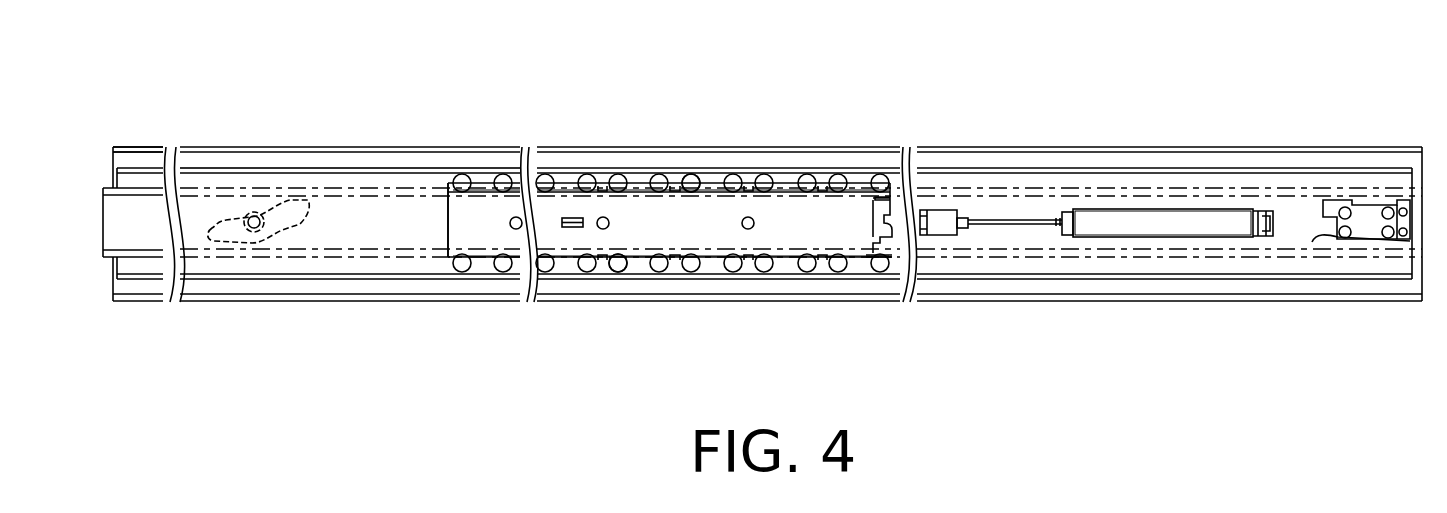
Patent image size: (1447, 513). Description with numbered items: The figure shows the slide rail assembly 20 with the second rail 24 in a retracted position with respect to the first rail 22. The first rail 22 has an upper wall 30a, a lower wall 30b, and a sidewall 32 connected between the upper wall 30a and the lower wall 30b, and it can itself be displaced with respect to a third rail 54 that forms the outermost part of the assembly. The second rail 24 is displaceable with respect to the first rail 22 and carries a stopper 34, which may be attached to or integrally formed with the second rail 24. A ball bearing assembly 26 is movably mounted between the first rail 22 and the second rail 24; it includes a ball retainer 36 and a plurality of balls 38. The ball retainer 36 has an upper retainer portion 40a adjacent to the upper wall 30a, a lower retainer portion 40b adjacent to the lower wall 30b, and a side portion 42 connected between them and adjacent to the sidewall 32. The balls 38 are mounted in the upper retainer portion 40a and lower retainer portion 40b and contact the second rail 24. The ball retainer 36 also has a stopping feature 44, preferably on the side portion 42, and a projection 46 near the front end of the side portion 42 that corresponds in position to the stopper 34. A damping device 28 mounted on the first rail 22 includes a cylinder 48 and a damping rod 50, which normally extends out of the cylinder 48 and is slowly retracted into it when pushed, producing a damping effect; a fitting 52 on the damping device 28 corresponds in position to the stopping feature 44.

The slide rail assembly 20 is at (134, 133).
The first rail 22 is at (215, 280).
The second rail 24 is at (130, 233).
The ball bearing assembly 26 is at (450, 258).
The damping device 28 is at (1167, 242).
The upper wall 30a is at (642, 168).
The lower wall 30b is at (570, 272).
The sidewall 32 is at (348, 235).
The stopper 34 is at (267, 212).
The ball retainer 36 is at (448, 205).
The balls 38 is at (691, 172).
The upper retainer portion 40a is at (712, 180).
The lower retainer portion 40b is at (708, 265).
The side portion 42 is at (853, 240).
The stopping feature 44 is at (573, 210).
The projection 46 is at (880, 172).
The cylinder 48 is at (1118, 220).
The damping rod 50 is at (1018, 222).
The fitting 52 is at (938, 220).
The third rail 54 is at (128, 158).